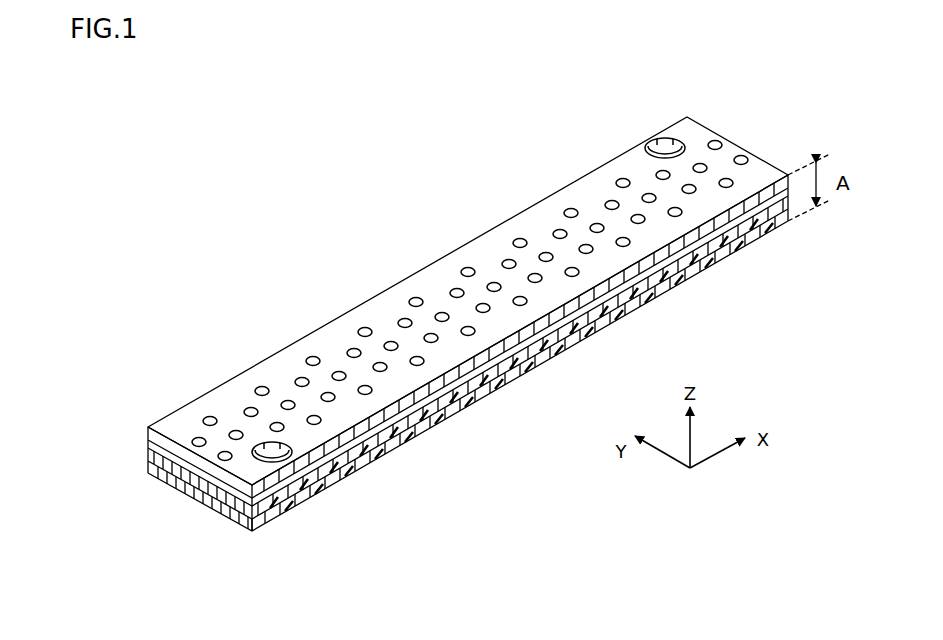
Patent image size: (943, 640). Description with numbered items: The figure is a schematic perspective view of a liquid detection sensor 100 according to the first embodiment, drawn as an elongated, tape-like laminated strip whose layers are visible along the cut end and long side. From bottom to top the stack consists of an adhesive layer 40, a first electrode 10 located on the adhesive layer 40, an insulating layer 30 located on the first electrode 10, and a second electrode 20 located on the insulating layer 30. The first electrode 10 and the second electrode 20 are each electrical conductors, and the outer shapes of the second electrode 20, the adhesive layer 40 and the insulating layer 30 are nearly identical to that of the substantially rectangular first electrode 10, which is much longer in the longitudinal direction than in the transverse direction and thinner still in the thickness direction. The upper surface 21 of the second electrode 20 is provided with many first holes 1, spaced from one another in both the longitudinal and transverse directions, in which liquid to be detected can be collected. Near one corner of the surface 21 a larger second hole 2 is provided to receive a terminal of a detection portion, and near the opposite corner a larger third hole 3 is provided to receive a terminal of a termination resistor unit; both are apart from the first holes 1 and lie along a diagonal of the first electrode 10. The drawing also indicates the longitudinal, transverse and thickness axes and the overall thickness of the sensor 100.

The liquid detection sensor 100 is at (757, 100).
The first hole 1 is at (494, 283).
The second hole 2 is at (660, 140).
The third hole 3 is at (262, 446).
The surface 21 is at (178, 422).
The second electrode 20 is at (148, 430).
The insulating layer 30 is at (148, 444).
The first electrode 10 is at (148, 455).
The adhesive layer 40 is at (153, 475).